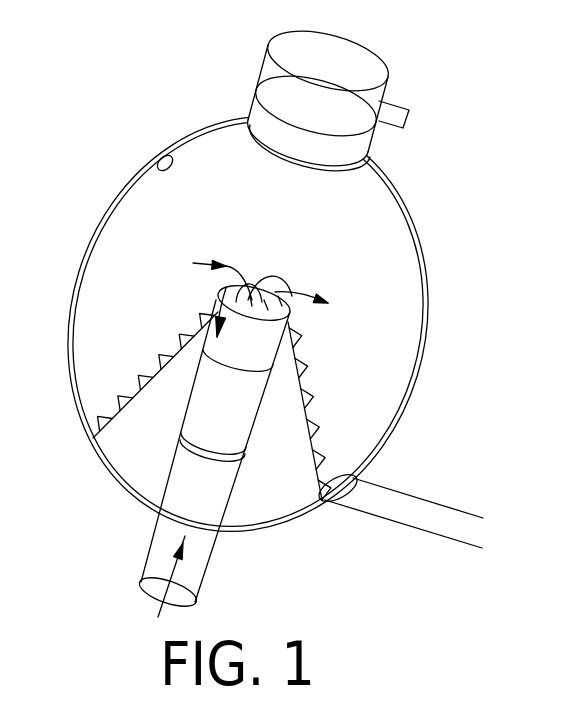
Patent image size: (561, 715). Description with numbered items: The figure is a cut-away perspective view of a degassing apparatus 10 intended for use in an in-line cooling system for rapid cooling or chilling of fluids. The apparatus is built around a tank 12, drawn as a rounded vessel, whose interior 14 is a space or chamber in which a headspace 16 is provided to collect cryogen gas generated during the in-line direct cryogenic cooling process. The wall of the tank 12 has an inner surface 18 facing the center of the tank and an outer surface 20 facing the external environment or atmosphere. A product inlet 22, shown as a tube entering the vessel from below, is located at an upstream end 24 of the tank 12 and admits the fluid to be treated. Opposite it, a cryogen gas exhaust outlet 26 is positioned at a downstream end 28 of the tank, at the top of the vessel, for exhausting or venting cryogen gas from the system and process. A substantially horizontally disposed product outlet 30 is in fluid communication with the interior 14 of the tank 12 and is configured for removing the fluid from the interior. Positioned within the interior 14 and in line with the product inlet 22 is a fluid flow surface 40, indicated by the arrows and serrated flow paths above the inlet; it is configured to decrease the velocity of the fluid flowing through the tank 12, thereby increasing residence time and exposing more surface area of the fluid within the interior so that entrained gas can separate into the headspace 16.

The degassing apparatus 10 is at (80, 121).
The tank 12 is at (123, 194).
The interior 14 is at (140, 282).
The headspace 16 is at (350, 230).
The inner surface 18 is at (177, 152).
The outer surface 20 is at (197, 133).
The product inlet 22 is at (217, 530).
The upstream end 24 is at (160, 513).
The cryogen gas exhaust outlet 26 is at (336, 93).
The downstream end 28 is at (366, 160).
The product outlet 30 is at (375, 516).
The fluid flow surface 40 is at (240, 263).